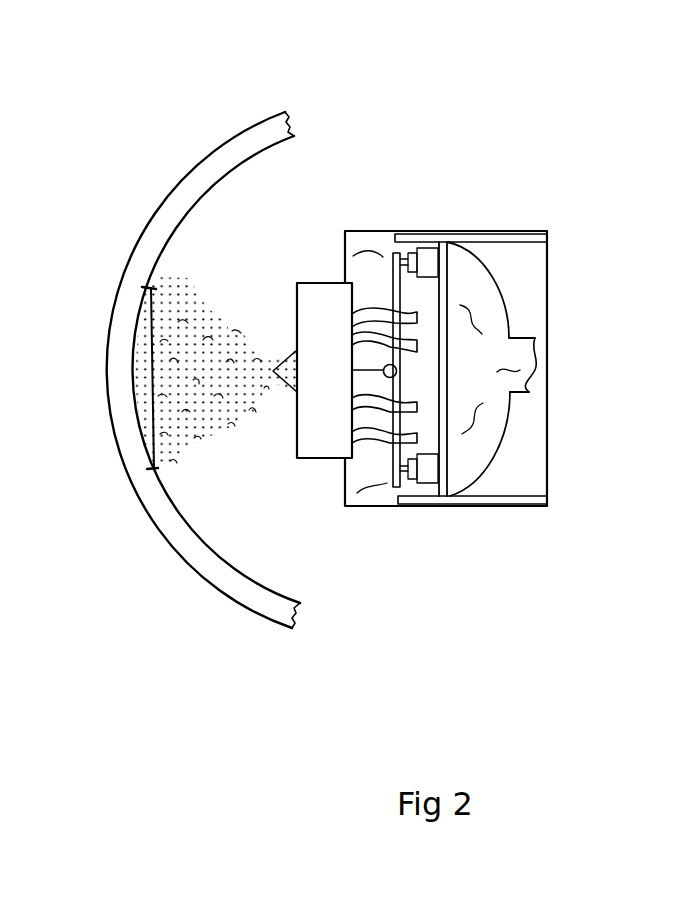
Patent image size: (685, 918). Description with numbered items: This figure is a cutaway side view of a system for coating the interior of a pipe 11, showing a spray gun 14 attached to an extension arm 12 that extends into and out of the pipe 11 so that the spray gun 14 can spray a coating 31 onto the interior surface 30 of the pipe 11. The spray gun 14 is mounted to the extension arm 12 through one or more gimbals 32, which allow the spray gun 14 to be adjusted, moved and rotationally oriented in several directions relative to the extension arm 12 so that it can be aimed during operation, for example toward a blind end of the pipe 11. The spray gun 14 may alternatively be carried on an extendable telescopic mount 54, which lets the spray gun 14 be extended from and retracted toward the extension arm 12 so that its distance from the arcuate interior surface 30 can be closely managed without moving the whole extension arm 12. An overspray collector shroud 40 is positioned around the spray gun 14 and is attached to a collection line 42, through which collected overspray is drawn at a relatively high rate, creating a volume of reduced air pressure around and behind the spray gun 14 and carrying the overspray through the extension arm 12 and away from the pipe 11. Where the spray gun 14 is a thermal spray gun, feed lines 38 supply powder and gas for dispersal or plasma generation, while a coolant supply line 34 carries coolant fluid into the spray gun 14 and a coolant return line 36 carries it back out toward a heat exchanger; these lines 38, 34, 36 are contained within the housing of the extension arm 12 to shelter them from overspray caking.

The pipe 11 is at (180, 182).
The interior surface 30 is at (222, 178).
The coating 31 is at (155, 313).
The spray gun 14 is at (303, 283).
The gimbals 32 is at (350, 458).
The extension arm 12 is at (507, 232).
The telescopic mount 54 is at (415, 498).
The coolant supply line 34 is at (419, 347).
The feed lines 38 is at (368, 400).
The coolant return line 36 is at (389, 377).
The overspray collector shroud 40 is at (490, 463).
The collection line 42 is at (524, 388).